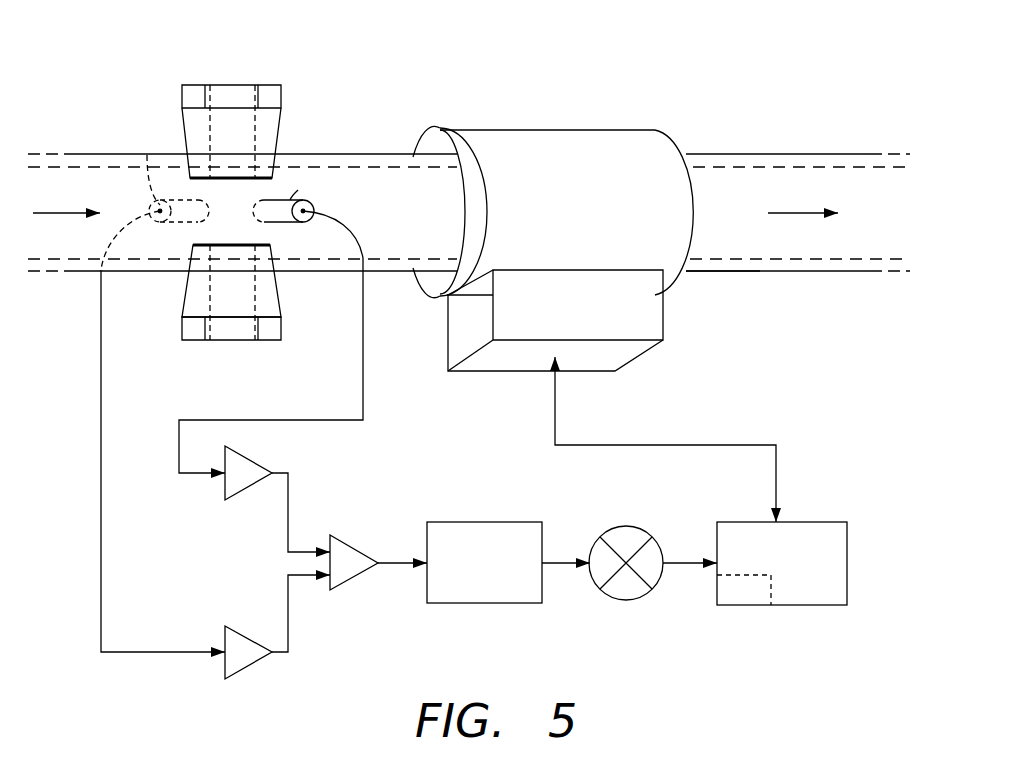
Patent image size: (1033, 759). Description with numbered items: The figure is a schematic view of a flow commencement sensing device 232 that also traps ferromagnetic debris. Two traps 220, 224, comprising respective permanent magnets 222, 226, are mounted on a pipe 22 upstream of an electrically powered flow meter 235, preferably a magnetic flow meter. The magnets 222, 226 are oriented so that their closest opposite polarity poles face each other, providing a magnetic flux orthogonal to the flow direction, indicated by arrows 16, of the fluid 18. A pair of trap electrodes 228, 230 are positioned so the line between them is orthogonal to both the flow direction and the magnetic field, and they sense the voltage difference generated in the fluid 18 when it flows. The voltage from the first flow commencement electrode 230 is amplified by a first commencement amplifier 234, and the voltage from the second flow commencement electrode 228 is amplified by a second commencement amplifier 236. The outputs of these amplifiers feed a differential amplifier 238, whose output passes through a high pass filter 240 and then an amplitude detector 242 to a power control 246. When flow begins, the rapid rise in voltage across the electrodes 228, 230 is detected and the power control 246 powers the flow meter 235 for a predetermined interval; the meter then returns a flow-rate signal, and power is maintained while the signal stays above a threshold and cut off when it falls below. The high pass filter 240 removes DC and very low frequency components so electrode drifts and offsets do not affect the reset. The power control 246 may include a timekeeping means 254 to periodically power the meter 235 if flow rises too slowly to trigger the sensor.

The arrows 16 is at (435, 193).
The fluid 18 is at (735, 182).
The pipe 22 is at (762, 272).
The trap 220 is at (270, 85).
The permanent magnet 222 is at (228, 85).
The trap 224 is at (265, 340).
The permanent magnet 226 is at (228, 340).
The second flow commencement electrode 228 is at (147, 155).
The first flow commencement electrode 230 is at (290, 200).
The flow commencement sensing device 232 is at (393, 422).
The first commencement amplifier 234 is at (240, 498).
The flow meter 235 is at (548, 130).
The second commencement amplifier 236 is at (242, 625).
The differential amplifier 238 is at (354, 590).
The high pass filter 240 is at (498, 603).
The amplitude detector 242 is at (628, 527).
The power control 246 is at (814, 605).
The timekeeping means 254 is at (722, 597).